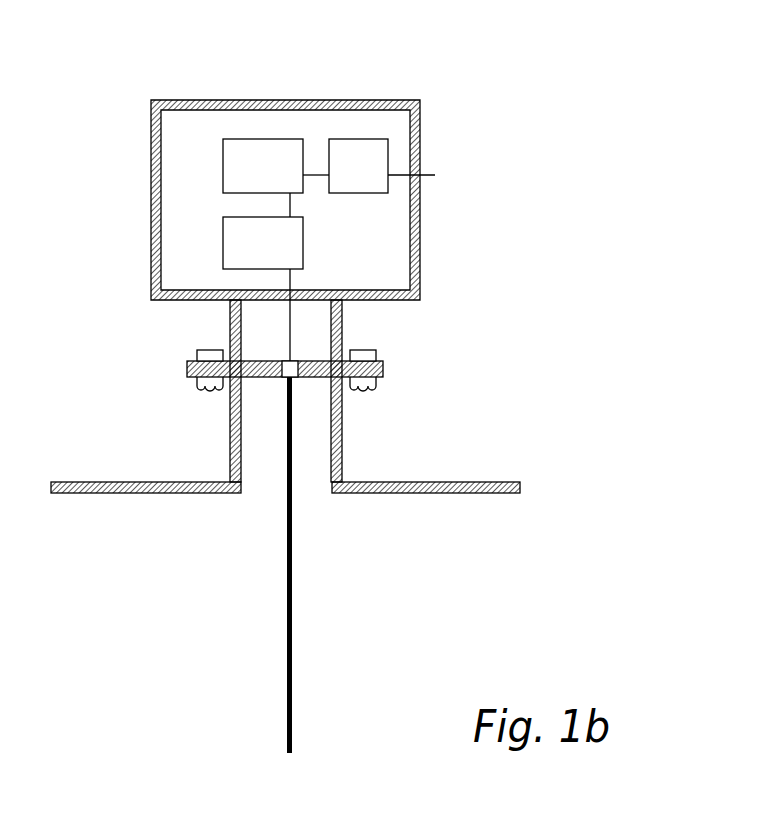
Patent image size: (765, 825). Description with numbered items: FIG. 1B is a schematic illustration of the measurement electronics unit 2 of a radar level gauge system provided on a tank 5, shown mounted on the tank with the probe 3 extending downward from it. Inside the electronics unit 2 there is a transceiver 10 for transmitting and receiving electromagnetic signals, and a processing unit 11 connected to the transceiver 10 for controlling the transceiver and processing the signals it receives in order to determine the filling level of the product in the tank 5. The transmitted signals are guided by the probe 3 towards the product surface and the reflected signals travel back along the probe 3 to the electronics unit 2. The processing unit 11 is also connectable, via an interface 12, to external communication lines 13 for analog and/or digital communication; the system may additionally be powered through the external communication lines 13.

The measurement electronics unit 2 is at (210, 100).
The probe 3 is at (292, 598).
The tank 5 is at (450, 482).
The transceiver 10 is at (303, 239).
The processing unit 11 is at (223, 168).
The interface 12 is at (359, 139).
The external communication lines 13 is at (430, 181).